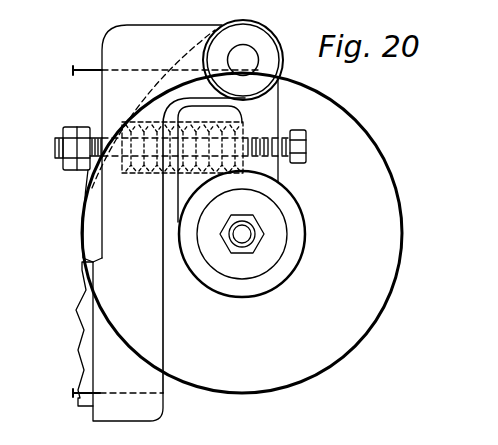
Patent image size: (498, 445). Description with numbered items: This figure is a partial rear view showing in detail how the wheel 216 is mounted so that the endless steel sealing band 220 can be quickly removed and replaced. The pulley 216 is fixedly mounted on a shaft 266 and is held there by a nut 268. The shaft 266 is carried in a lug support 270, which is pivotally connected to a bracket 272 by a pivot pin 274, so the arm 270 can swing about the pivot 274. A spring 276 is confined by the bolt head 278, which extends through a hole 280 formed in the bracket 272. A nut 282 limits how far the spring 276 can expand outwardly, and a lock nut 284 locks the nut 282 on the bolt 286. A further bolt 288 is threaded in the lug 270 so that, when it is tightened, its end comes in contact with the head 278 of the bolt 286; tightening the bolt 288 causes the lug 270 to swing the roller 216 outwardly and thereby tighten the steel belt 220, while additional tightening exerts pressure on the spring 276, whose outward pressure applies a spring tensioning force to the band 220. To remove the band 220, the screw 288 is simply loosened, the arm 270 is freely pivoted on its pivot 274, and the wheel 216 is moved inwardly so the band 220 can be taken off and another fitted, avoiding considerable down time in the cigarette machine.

The wheel 216 is at (367, 178).
The endless steel sealing band 220 is at (80, 74).
The shaft 266 is at (250, 228).
The nut 268 is at (254, 243).
The lug support 270 is at (265, 113).
The bracket 272 is at (170, 44).
The pivot pin 274 is at (244, 57).
The spring 276 is at (146, 172).
The bolt head 278 is at (182, 135).
The hole 280 is at (99, 165).
The nut 282 is at (88, 126).
The lock nut 284 is at (63, 128).
The bolt 286 is at (59, 155).
The bolt 288 is at (306, 148).